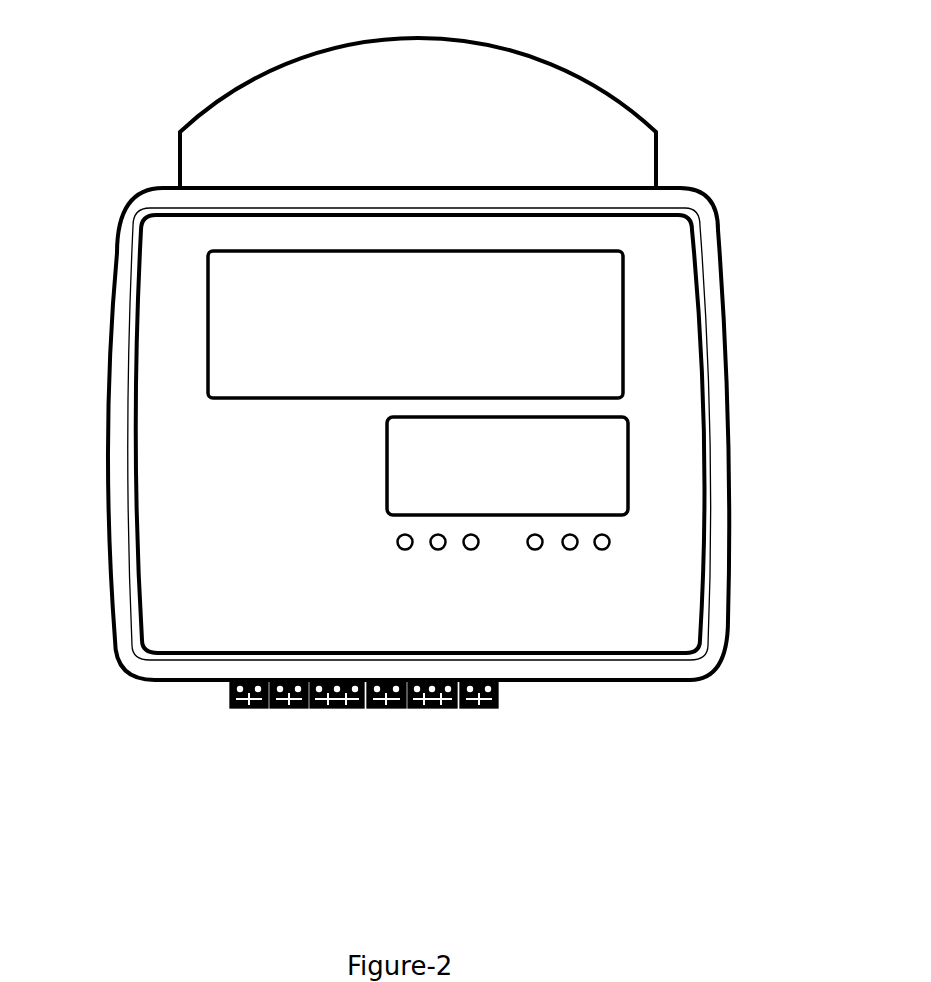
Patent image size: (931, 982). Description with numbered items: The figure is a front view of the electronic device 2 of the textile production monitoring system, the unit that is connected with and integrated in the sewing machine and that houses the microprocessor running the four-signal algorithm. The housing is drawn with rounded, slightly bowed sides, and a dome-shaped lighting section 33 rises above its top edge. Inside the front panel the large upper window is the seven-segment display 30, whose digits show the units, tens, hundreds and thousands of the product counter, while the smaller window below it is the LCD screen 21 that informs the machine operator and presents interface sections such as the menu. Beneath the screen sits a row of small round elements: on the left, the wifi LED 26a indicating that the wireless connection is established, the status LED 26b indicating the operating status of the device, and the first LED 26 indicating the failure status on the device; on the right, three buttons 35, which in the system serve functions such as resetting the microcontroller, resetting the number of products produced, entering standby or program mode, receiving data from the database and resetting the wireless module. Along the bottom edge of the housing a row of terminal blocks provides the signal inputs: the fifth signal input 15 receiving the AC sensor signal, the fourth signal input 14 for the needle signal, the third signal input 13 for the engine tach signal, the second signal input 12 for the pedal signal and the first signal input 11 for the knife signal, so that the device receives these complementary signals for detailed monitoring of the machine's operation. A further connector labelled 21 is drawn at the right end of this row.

The electronic device 2 is at (707, 240).
The lighting section 33 is at (548, 117).
The 7-segment display 30 is at (268, 303).
The LCD screen 21 is at (585, 457).
The wifi LED 26a is at (397, 543).
The status LED 26b is at (428, 553).
The first LED 26 is at (471, 550).
The button 35 is at (535, 550).
The fifth signal input 15 is at (232, 700).
The fourth signal input 14 is at (283, 705).
The third signal input 13 is at (333, 706).
The second signal input 12 is at (380, 706).
The first signal input 11 is at (423, 707).